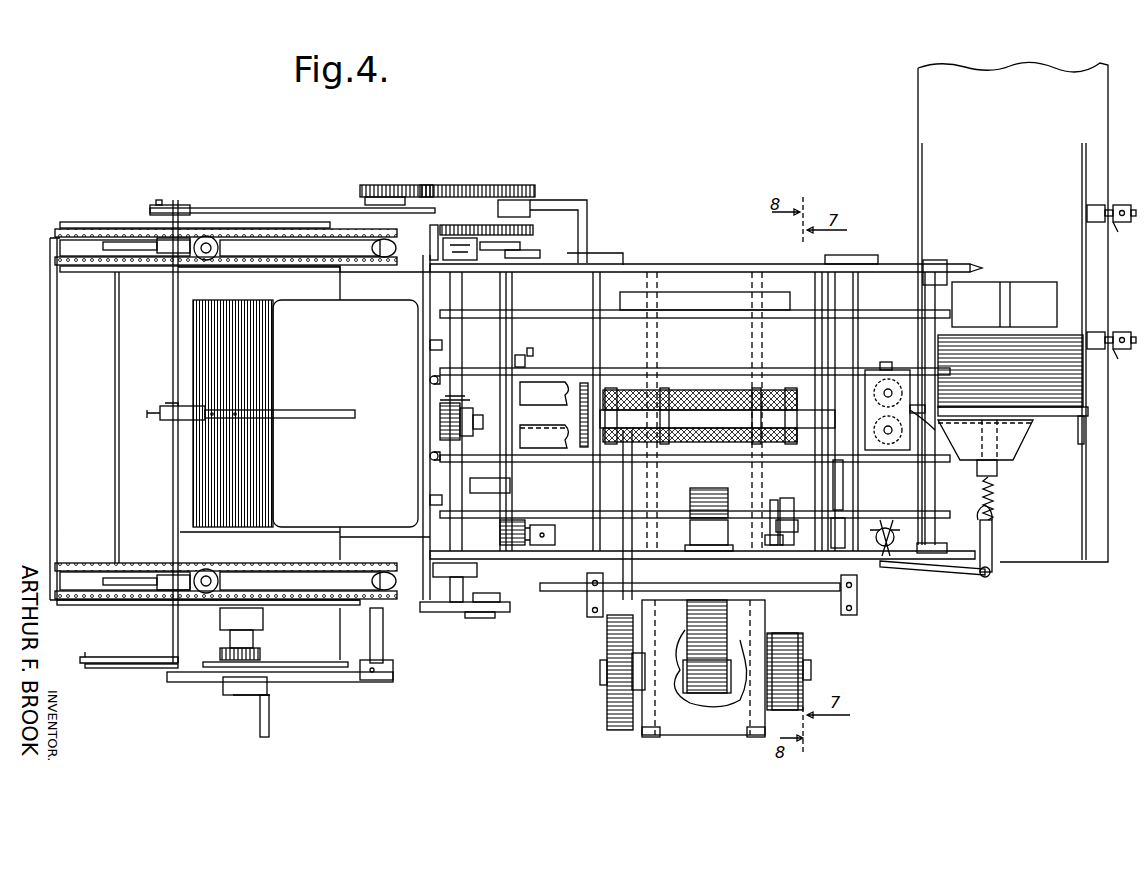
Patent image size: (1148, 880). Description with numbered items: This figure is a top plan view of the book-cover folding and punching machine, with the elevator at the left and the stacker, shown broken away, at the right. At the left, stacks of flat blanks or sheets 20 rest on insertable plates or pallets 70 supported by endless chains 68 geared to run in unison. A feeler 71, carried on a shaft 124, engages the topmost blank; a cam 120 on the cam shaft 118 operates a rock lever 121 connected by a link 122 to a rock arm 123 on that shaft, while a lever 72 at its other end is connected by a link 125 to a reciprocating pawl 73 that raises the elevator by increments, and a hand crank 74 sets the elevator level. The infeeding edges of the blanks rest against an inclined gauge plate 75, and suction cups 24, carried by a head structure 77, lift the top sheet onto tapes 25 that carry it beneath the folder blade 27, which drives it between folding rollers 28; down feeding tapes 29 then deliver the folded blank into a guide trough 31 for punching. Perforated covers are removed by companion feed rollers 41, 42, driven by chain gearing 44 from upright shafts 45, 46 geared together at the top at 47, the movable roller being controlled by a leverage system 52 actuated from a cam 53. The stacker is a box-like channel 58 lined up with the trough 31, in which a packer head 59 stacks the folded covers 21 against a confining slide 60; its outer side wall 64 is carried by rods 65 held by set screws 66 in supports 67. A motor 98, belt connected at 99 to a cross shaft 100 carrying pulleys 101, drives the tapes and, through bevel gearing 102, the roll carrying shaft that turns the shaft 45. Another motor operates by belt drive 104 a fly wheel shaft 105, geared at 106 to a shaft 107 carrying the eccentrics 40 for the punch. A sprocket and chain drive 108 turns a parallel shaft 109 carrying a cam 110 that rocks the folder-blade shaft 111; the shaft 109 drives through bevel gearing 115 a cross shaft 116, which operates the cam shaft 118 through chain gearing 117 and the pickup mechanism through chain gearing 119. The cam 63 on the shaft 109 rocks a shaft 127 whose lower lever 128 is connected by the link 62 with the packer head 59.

The sheet 20 is at (303, 460).
The book cover 21 is at (1072, 392).
The suction cups 24 is at (428, 380).
The tapes 25 is at (558, 310).
The folder blade 27 is at (715, 410).
The folding rollers 28 is at (688, 390).
The down feeding tapes 29 is at (665, 388).
The guide trough 31 is at (913, 412).
The eccentrics 40 is at (605, 555).
The feed roller 41 is at (772, 500).
The feed roller 42 is at (797, 355).
The chain gearing 44 is at (580, 425).
The upright shaft 45 is at (890, 434).
The upright shaft 46 is at (886, 390).
The gearing 47 is at (897, 370).
The leverage system 52 is at (842, 470).
The cam 53 is at (840, 525).
The box-like channel 58 is at (930, 120).
The packer head 59 is at (1040, 440).
The confining slide 60 is at (1035, 282).
The connections 62 is at (992, 548).
The cam 63 is at (893, 520).
The outer side wall 64 is at (1082, 240).
The rods 65 is at (1100, 205).
The set screws 66 is at (1122, 205).
The supports 67 is at (1120, 332).
The endless chains 68 is at (100, 232).
The pallets 70 is at (130, 478).
The feeler 71 is at (305, 410).
The lever 72 is at (127, 657).
The pawl 73 is at (297, 662).
The hand crank 74 is at (270, 720).
The gauge plate 75 is at (424, 616).
The head structure 77 is at (440, 250).
The motor 98 is at (475, 580).
The belt connection 99 is at (476, 618).
The cross shaft 100 is at (462, 500).
The pulleys 101 is at (432, 344).
The bevel gearing 102 is at (440, 418).
The belt drive 104 is at (790, 655).
The fly wheel shaft 105 is at (684, 690).
The gearing 106 is at (738, 636).
The shaft 107 is at (680, 580).
The sprocket and chain drive 108 is at (690, 510).
The shaft 109 is at (733, 530).
The cam 110 is at (790, 505).
The shaft 111 is at (652, 598).
The bevel gearing 115 is at (512, 532).
The cross shaft 116 is at (520, 365).
The chain gearing 117 is at (490, 185).
The cam shaft 118 is at (395, 185).
The chain gearing 119 is at (472, 228).
The cam 120 is at (365, 192).
The rock lever 121 is at (425, 185).
The link 122 is at (278, 208).
The rock arm 123 is at (172, 212).
The shaft 124 is at (172, 312).
The link 125 is at (140, 668).
The shaft 127 is at (890, 578).
The lever 128 is at (980, 577).